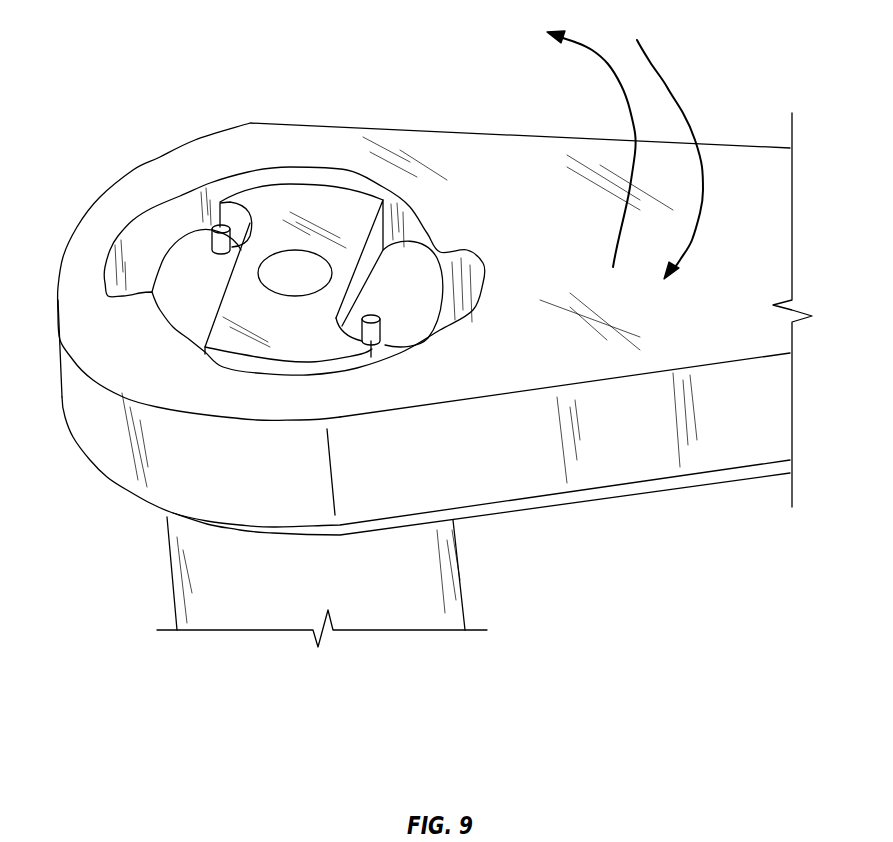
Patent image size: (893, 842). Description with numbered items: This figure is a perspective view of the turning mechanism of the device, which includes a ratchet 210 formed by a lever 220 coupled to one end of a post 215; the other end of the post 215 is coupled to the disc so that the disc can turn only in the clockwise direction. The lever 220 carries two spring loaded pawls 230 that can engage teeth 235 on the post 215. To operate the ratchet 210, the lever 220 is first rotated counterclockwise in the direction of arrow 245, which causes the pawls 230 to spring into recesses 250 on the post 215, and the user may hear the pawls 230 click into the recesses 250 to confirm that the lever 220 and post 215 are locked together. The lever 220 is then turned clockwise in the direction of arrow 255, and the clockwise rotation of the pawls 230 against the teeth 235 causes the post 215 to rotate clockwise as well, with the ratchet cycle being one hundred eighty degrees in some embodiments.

The ratchet 210 is at (147, 62).
The post 215 is at (458, 577).
The lever 220 is at (722, 173).
The spring loaded pawls 230 is at (178, 263).
The teeth 235 is at (230, 201).
The arrow 245 is at (570, 43).
The recesses 250 is at (220, 203).
The arrow 255 is at (650, 50).